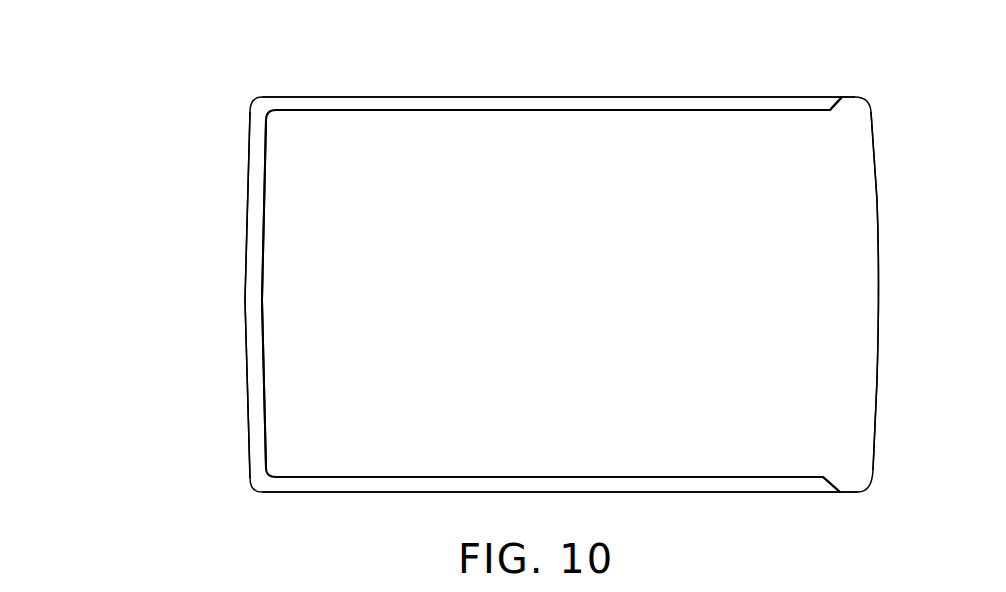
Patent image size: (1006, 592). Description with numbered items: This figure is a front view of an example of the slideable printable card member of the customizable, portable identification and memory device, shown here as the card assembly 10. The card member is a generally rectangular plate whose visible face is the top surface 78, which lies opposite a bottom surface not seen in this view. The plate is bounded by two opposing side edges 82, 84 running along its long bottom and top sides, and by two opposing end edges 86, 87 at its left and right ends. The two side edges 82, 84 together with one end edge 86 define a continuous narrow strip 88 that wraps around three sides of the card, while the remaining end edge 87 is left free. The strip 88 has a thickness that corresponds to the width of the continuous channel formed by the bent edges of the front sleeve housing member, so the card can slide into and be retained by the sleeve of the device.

The panel assembly 10 is at (585, 83).
The top surface 78 is at (578, 293).
The side edge 82 is at (348, 494).
The side edge 84 is at (380, 97).
The end edge 86 is at (247, 167).
The end edge 87 is at (879, 272).
The continuous narrow strip 88 is at (693, 107).